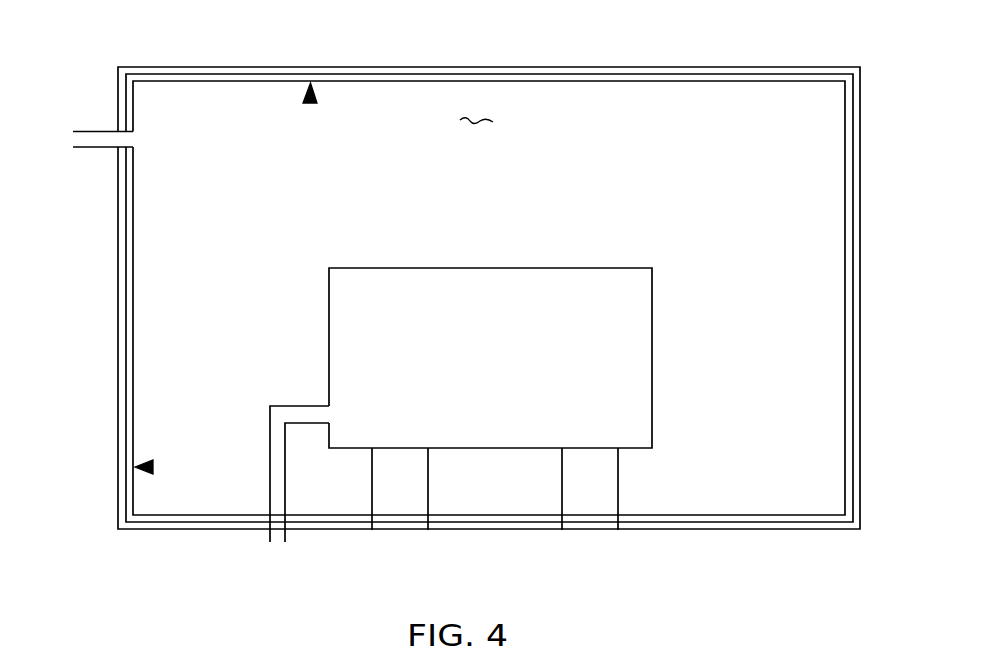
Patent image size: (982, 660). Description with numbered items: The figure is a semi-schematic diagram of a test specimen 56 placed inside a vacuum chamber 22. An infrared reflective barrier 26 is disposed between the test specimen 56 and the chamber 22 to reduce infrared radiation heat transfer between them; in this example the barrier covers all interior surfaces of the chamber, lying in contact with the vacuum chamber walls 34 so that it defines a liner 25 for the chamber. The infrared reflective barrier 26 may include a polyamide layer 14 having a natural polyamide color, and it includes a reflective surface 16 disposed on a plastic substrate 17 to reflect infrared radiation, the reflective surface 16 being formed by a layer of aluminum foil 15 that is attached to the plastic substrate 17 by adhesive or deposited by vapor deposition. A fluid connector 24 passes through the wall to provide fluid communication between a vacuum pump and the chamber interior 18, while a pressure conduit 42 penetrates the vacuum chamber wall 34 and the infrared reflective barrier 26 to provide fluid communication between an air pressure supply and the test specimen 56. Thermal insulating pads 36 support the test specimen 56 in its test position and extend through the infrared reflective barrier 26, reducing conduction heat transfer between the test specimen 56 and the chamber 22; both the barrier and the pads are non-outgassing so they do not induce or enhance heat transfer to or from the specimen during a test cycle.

The polyamide layer 14 is at (130, 385).
The layer of aluminum foil 15 is at (120, 500).
The reflective surface 16 is at (122, 327).
The plastic substrate 17 is at (130, 163).
The chamber interior 18 is at (475, 117).
The vacuum chamber 22 is at (117, 103).
The fluid connector 24 is at (93, 149).
The liner 25 is at (153, 467).
The infrared reflective barrier 26 is at (308, 103).
The vacuum chamber walls 34 is at (606, 70).
The thermal insulating pad 36 is at (410, 503).
The pressure conduit 42 is at (313, 423).
The test specimen 56 is at (653, 353).